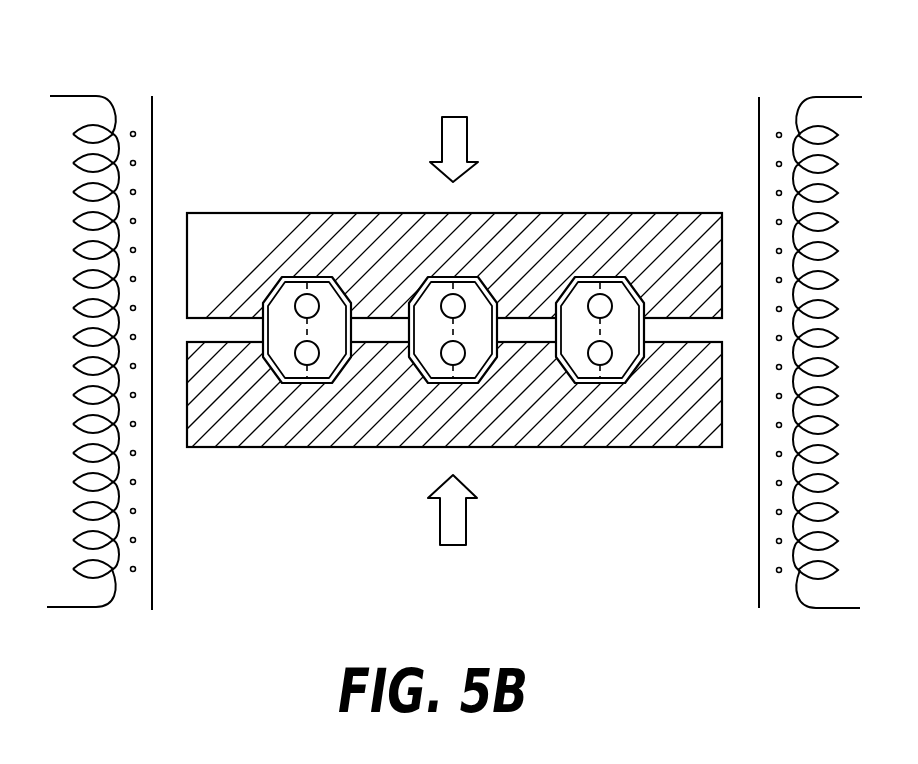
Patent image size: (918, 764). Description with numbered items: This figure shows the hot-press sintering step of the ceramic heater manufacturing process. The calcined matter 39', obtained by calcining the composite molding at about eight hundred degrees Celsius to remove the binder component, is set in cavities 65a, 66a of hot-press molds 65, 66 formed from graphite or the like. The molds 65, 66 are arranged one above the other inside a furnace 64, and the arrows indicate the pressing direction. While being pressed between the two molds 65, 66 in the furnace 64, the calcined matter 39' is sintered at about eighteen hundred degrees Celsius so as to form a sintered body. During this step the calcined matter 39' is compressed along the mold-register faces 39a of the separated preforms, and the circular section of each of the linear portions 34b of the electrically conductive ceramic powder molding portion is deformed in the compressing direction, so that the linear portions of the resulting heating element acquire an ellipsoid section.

The furnace 64 is at (759, 118).
The hot-press mold 65 is at (197, 262).
The hot-press mold 66 is at (187, 447).
The cavity 65a is at (317, 285).
The cavity 66a is at (305, 383).
The linear portion 34b is at (300, 296).
The mold-register face 39a is at (305, 334).
The calcined matter 39' is at (418, 460).